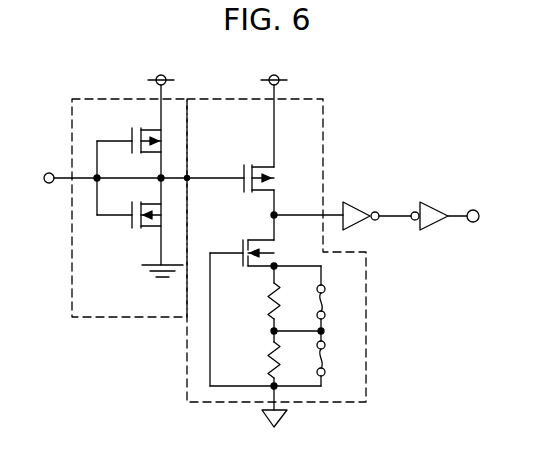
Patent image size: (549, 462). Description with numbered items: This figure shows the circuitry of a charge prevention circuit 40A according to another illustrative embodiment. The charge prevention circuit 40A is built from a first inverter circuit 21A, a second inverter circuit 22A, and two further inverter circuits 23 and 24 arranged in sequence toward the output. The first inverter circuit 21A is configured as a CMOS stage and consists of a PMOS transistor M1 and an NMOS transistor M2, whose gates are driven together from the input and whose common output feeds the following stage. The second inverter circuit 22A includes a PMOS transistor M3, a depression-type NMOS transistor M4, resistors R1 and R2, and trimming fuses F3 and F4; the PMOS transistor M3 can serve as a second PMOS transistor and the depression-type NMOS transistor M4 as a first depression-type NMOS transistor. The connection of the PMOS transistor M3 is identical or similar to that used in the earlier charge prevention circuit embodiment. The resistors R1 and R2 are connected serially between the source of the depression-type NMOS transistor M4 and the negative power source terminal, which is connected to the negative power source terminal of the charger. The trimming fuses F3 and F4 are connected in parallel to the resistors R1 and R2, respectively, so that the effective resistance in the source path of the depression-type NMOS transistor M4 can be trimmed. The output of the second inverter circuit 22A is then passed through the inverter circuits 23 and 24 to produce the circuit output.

The charge prevention circuit 40A is at (381, 131).
The first inverter circuit 21A is at (111, 97).
The second inverter circuit 22A is at (222, 97).
The inverter circuit 23 is at (358, 204).
The inverter circuit 24 is at (436, 204).
The PMOS transistor M1 is at (129, 133).
The NMOS transistor M2 is at (129, 207).
The PMOS transistor M3 is at (259, 170).
The depression-type NMOS transistor M4 is at (242, 245).
The resistor R1 is at (262, 301).
The resistor R2 is at (262, 360).
The trimming fuse F3 is at (331, 298).
The trimming fuse F4 is at (331, 358).